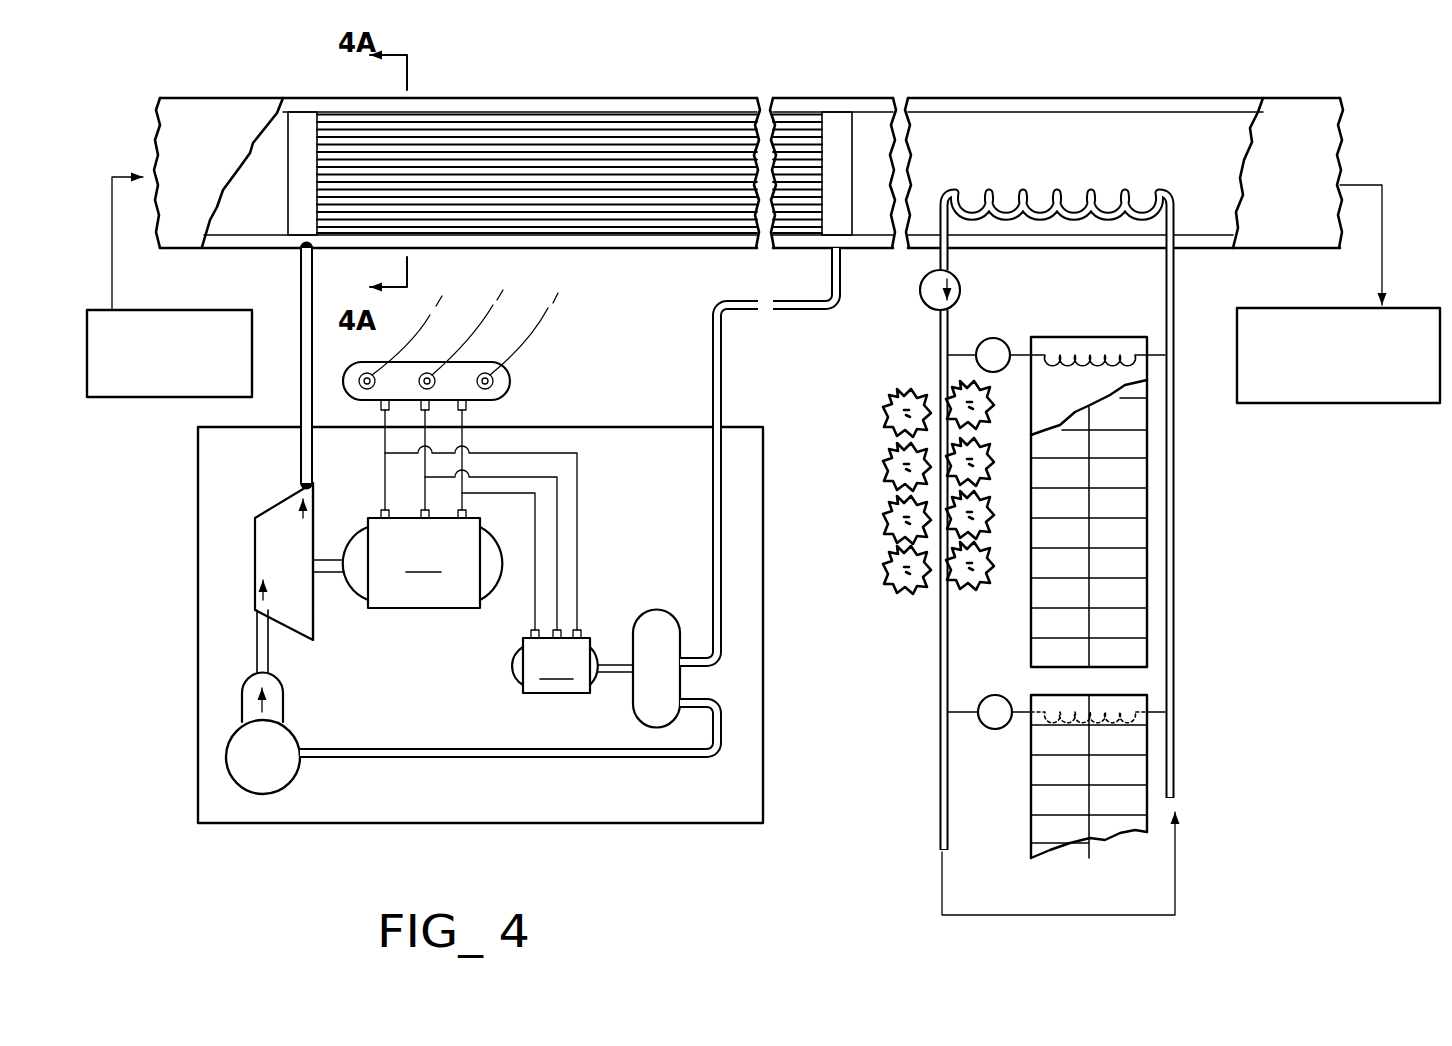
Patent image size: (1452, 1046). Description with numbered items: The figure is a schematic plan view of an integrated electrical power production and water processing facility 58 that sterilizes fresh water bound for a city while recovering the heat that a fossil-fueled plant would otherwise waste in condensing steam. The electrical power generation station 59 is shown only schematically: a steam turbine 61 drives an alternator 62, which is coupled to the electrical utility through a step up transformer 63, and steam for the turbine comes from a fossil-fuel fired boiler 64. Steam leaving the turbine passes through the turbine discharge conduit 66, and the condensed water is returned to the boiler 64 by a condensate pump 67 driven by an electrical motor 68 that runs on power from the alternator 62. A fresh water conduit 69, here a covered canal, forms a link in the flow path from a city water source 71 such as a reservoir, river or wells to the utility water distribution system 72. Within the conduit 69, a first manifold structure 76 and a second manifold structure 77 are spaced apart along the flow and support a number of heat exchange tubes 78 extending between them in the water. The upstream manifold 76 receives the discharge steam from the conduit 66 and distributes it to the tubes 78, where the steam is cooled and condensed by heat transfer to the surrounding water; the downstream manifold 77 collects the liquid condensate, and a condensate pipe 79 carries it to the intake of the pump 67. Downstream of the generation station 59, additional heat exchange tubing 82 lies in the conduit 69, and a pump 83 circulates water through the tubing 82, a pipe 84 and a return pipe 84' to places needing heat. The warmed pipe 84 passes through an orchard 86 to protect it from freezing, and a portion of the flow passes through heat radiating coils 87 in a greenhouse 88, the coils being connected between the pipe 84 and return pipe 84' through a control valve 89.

The integrated electrical power production and water processing facility 58 is at (155, 452).
The electrical power generation station 59 is at (198, 668).
The steam turbine 61 is at (268, 510).
The alternator 62 is at (423, 559).
The step up transformer 63 is at (512, 381).
The boiler 64 is at (300, 735).
The turbine discharge conduit 66 is at (314, 455).
The condensate pump 67 is at (653, 610).
The electrical motor 68 is at (572, 661).
The fresh water conduit 69 is at (872, 262).
The city water source 71 is at (178, 310).
The utility water distribution system 72 is at (1317, 403).
The first manifold structure 76 is at (287, 183).
The second manifold structure 77 is at (852, 179).
The heat exchange tubes 78 is at (597, 153).
The condensate pipe 79 is at (710, 321).
The heat exchange tubing 82 is at (1093, 187).
The pump 83 is at (962, 290).
The pipe 84 is at (909, 580).
The return pipe 84' is at (1212, 519).
The orchard 86 is at (887, 522).
The heat radiating coils 87 is at (1105, 345).
The greenhouse 88 is at (1148, 530).
The control valve 89 is at (1002, 337).